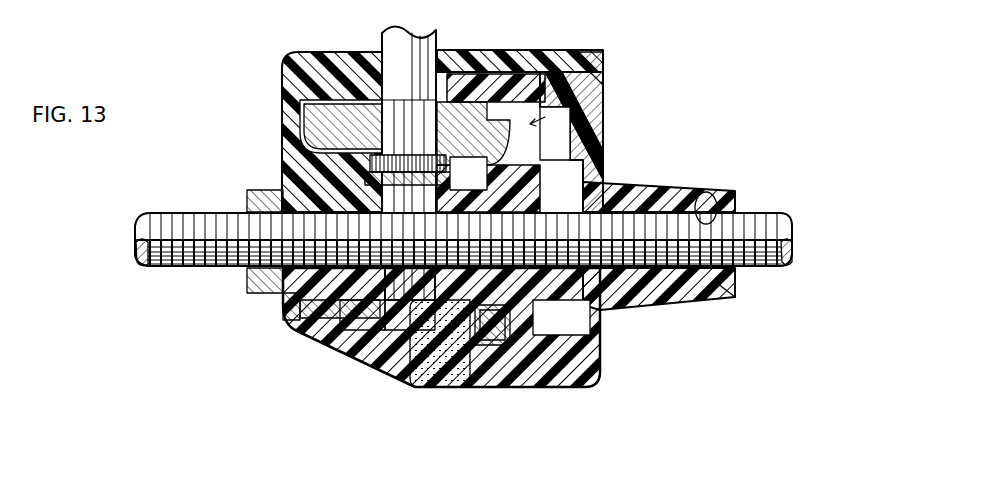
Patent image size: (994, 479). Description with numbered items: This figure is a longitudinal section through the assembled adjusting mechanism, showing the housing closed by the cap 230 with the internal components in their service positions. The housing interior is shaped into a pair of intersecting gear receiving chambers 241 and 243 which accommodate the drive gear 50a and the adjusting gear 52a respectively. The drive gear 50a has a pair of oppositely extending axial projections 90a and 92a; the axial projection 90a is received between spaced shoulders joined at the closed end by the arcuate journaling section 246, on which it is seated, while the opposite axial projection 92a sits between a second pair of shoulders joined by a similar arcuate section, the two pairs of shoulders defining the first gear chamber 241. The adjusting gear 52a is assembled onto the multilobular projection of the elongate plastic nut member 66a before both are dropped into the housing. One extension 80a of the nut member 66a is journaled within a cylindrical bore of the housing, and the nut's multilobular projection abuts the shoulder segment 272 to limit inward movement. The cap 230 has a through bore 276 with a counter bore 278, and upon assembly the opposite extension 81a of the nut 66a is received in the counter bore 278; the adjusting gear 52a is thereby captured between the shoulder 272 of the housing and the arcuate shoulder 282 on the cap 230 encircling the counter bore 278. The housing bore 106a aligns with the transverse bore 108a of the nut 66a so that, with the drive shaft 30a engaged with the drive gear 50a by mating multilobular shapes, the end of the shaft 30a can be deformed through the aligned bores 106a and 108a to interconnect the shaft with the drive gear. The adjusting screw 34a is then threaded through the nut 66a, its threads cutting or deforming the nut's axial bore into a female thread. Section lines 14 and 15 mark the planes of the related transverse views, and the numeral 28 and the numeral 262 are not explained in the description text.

The section line 14- 14 is at (400, 17).
The section line 15- 15 is at (235, 70).
The wheel 28 is at (717, 283).
The drive shaft 30a is at (387, 35).
The adjusting screw 34a is at (157, 266).
The drive gear 50a is at (317, 117).
The adjusting gear 52a is at (583, 362).
The nut member 66a is at (320, 318).
The extension of nut member 80a is at (290, 295).
The extension of nut member 81a is at (600, 313).
The axial projection 90a is at (470, 53).
The axial projection 92a is at (365, 172).
The bore 106a is at (367, 318).
The transverse bore 108a is at (430, 278).
The cap 230 is at (600, 140).
The first gear chamber 241 is at (600, 95).
The gear receiving chamber 243 is at (510, 390).
The arcuate journaling section 246 is at (337, 103).
The corner flange 262 is at (580, 68).
The shoulder segment 272 is at (440, 343).
The through bore 276 is at (713, 197).
The counter bore 278 is at (583, 187).
The arcuate shoulder 282 is at (527, 325).